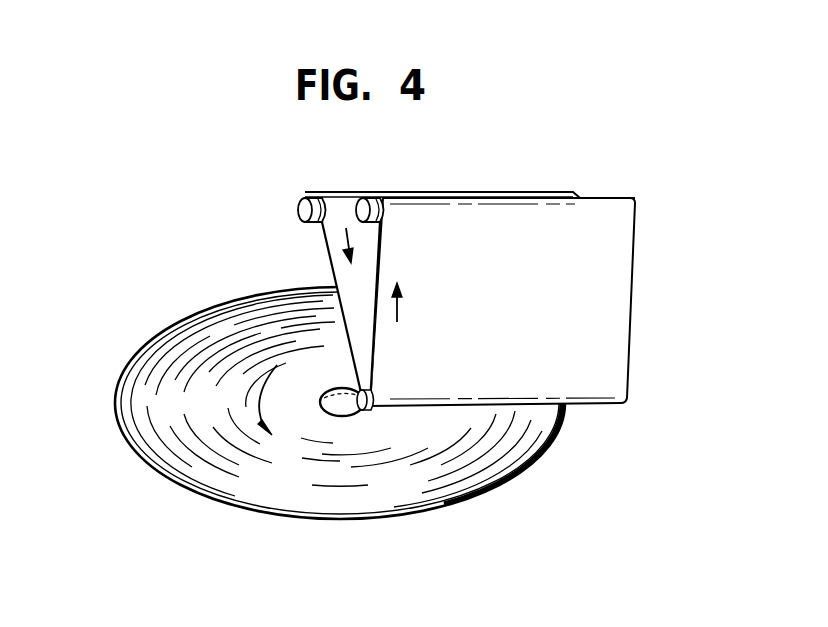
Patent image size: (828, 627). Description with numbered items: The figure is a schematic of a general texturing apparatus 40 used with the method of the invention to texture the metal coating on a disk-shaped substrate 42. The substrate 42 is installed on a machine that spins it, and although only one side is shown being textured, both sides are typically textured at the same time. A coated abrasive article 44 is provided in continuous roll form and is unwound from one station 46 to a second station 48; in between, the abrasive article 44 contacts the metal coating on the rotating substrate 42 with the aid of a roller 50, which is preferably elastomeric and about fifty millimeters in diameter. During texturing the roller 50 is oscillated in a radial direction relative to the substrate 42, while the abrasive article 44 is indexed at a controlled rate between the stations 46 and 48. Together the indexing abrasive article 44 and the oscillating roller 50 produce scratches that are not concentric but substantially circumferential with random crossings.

The texturing apparatus 40 is at (190, 265).
The substrate 42 is at (255, 518).
The coated abrasive article 44 is at (632, 303).
The station 46 is at (300, 206).
The second station 48 is at (357, 200).
The roller 50 is at (368, 409).